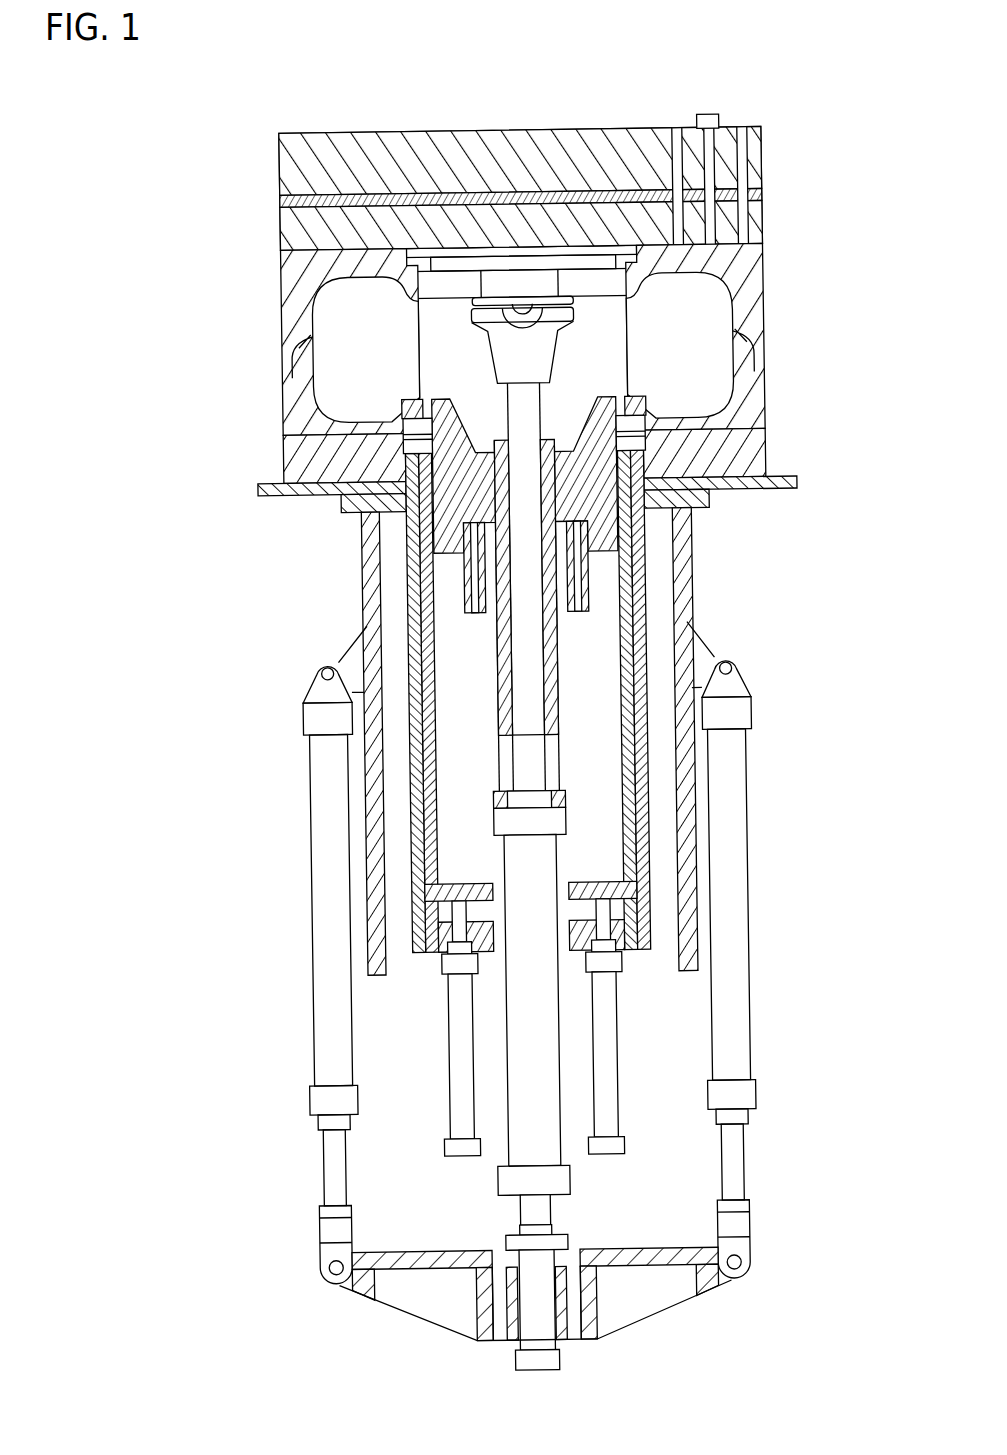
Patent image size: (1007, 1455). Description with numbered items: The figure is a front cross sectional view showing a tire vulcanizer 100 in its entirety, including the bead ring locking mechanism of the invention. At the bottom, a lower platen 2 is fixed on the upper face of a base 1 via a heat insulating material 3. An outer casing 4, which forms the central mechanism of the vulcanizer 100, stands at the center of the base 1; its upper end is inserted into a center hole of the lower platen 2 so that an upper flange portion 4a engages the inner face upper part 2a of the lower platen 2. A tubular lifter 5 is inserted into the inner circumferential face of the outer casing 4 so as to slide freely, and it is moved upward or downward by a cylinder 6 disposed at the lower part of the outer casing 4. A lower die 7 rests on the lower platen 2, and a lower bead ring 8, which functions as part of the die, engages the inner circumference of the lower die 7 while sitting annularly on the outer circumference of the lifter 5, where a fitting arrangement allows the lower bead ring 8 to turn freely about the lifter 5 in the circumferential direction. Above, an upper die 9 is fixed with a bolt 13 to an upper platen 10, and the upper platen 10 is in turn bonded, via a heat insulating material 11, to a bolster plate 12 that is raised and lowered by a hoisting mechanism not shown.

The vulcanizer 100 is at (311, 113).
The bolster plate 12 is at (290, 147).
The heat insulating material 11 is at (290, 204).
The upper platen 10 is at (293, 230).
The bolt 13 is at (722, 120).
The upper die 9 is at (295, 300).
The lower die 7 is at (288, 395).
The lower platen 2 is at (286, 462).
The heat insulating material 3 is at (255, 488).
The upper flange portion 4a is at (397, 435).
The base 1 is at (362, 598).
The inner face upper part 2a is at (452, 413).
The lifter 5 is at (627, 560).
The outer casing 4 is at (647, 607).
The lower bead ring 8 is at (408, 410).
The cylinder 6 is at (456, 1100).